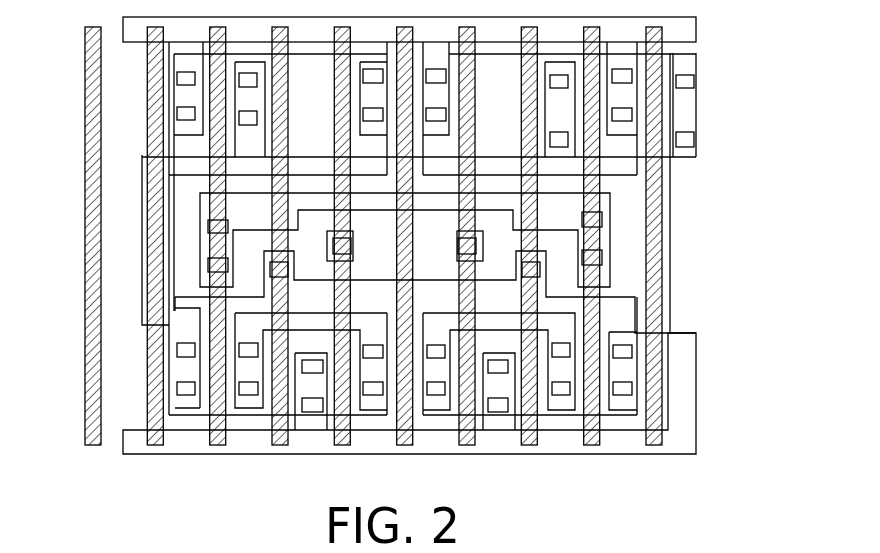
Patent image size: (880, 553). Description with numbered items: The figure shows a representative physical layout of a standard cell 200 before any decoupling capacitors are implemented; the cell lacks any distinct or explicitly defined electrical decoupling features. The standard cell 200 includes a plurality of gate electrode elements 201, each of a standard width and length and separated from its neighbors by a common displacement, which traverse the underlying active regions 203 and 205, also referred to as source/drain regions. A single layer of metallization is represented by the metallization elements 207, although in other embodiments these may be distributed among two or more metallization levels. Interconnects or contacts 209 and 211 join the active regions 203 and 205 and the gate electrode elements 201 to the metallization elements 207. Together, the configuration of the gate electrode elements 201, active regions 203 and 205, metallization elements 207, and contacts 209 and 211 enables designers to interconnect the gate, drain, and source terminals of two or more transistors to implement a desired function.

The standard cell 200 is at (566, 523).
The gate electrode elements 201 is at (147, 388).
The active regions 203 is at (170, 147).
The active regions 205 is at (438, 417).
The metallization elements 207 is at (610, 242).
The interconnects or contacts 209 is at (178, 82).
The interconnects or contacts 211 is at (209, 265).